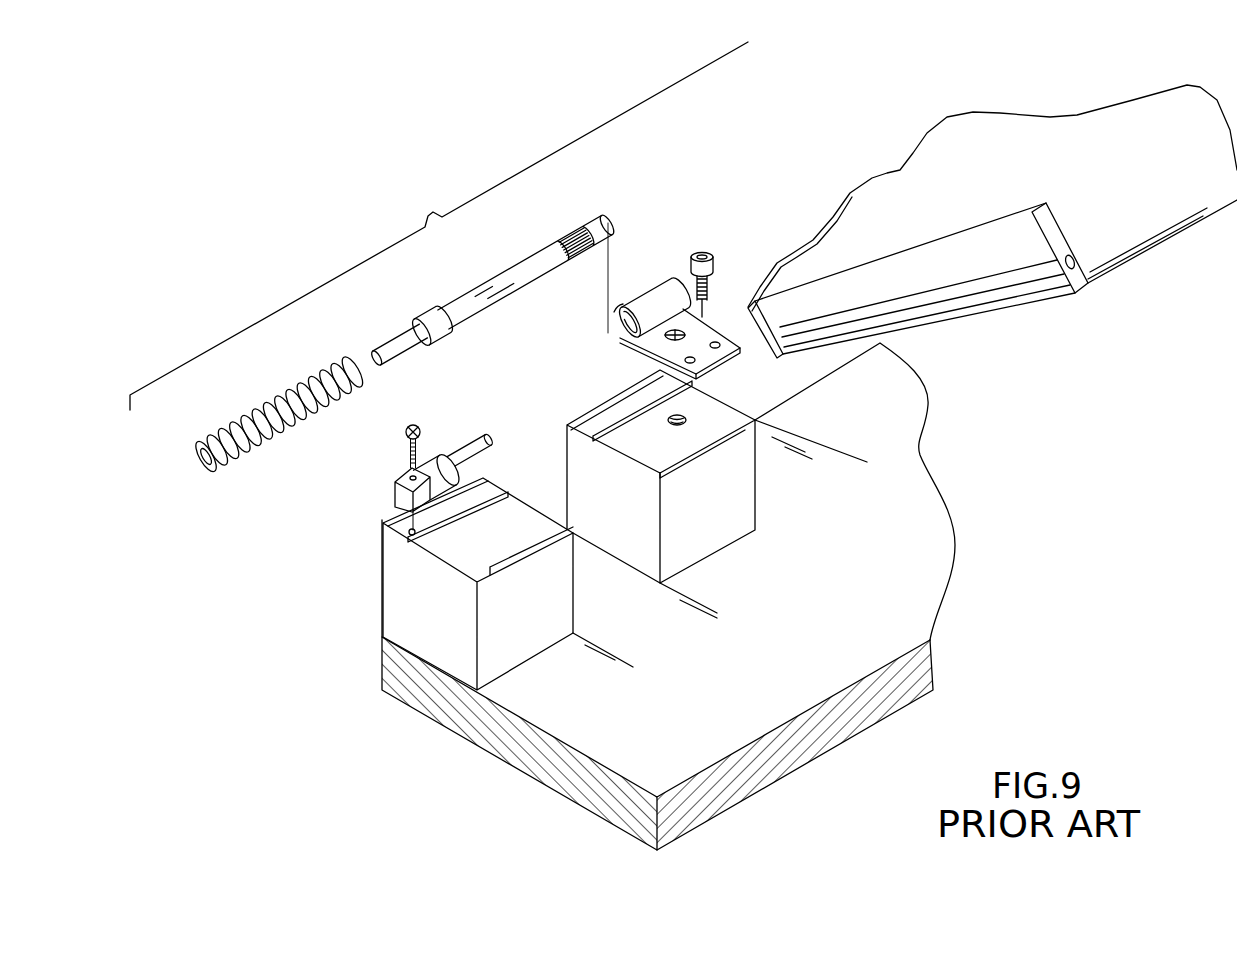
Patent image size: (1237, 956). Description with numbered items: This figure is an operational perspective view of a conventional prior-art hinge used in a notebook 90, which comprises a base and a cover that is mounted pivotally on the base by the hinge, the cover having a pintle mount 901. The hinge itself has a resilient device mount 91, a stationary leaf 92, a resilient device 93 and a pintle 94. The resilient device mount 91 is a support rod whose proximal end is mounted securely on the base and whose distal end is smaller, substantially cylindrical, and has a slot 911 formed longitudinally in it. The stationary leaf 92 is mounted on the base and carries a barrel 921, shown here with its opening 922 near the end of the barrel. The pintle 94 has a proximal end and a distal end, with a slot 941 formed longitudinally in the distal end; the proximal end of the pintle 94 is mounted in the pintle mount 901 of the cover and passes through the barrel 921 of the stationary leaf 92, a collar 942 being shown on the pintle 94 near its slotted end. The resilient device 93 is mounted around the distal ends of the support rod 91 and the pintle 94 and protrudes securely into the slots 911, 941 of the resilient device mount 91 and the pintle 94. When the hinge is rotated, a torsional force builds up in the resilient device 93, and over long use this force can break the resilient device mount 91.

The notebook 90 is at (973, 123).
The pintle mount 901 is at (1066, 262).
The resilient device mount 91 is at (403, 497).
The slot 911 is at (485, 452).
The stationary leaf 92 is at (717, 360).
The barrel 921 is at (663, 295).
The opening 922 is at (617, 315).
The resilient device 93 is at (245, 418).
The pintle 94 is at (507, 275).
The slot 941 is at (373, 347).
The collar 942 is at (430, 313).